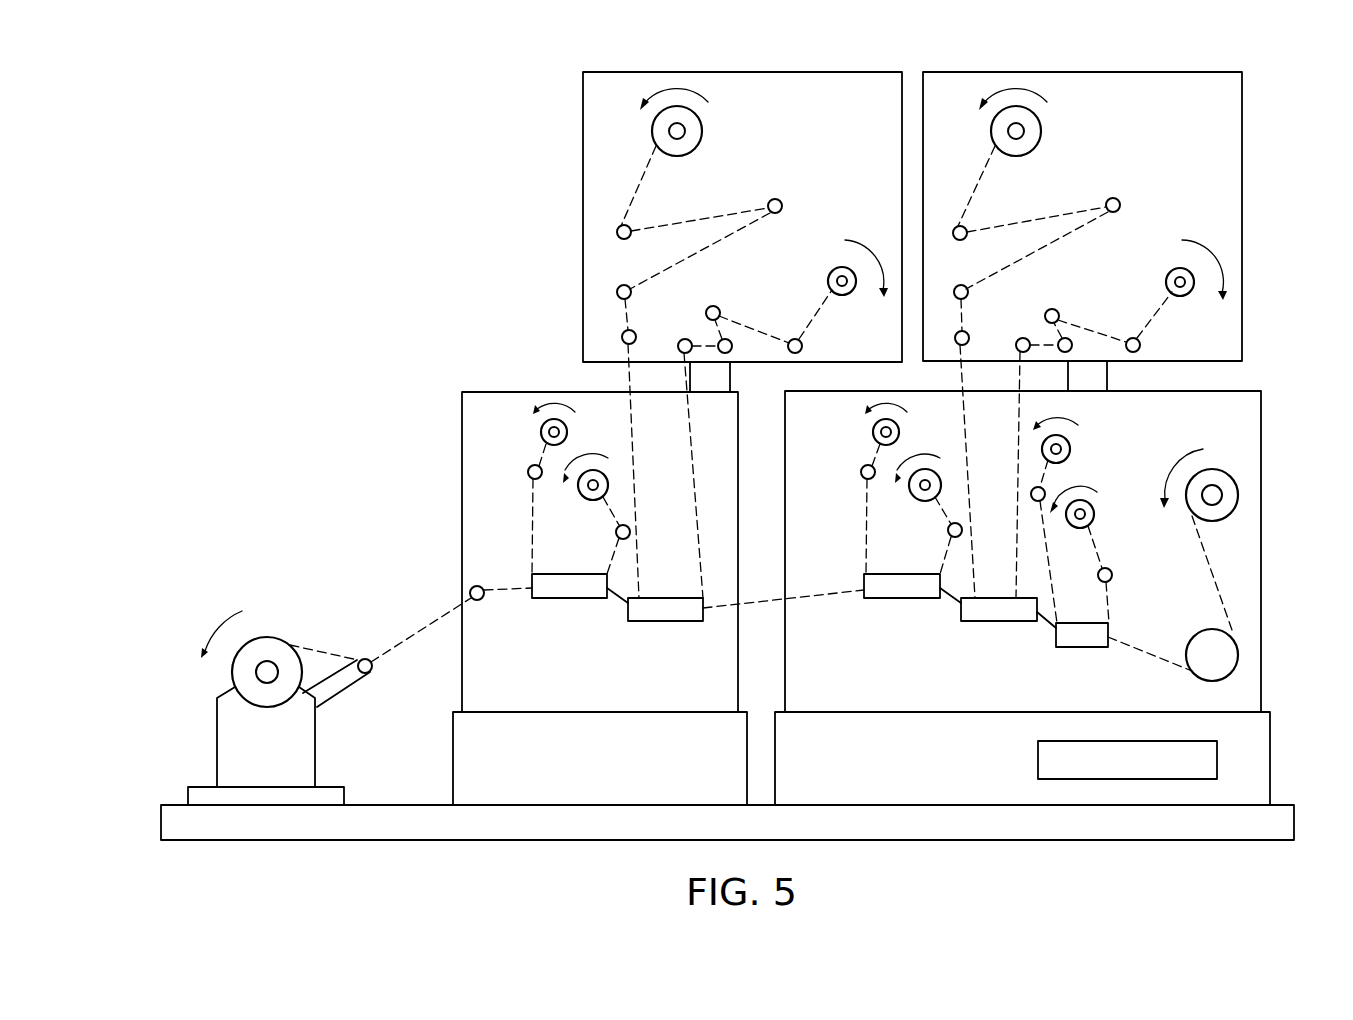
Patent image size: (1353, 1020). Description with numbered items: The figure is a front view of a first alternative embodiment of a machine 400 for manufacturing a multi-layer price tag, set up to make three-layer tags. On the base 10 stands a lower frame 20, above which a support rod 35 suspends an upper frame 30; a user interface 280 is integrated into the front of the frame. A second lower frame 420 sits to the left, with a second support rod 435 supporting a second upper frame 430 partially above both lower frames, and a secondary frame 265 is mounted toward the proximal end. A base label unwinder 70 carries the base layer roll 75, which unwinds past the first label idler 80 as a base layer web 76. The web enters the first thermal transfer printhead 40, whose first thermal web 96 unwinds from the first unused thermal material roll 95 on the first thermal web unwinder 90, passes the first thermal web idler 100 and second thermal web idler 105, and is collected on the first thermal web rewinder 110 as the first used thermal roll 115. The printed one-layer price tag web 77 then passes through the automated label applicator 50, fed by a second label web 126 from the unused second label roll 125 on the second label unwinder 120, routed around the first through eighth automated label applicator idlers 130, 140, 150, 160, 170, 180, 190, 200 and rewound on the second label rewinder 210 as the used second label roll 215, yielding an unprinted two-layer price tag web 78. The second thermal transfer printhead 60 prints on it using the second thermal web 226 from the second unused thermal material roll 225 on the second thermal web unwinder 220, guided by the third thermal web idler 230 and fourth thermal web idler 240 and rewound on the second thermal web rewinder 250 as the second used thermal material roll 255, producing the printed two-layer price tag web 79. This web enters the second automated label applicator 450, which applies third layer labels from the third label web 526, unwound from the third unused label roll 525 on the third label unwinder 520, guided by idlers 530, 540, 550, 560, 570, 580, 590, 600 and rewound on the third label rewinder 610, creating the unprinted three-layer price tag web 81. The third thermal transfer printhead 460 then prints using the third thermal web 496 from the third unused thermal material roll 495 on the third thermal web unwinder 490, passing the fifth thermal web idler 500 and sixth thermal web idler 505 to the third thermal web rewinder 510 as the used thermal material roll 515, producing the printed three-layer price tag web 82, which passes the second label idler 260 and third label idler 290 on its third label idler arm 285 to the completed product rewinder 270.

The base 10 is at (197, 840).
The lower frame 20 is at (1262, 420).
The upper frame 30 is at (1183, 80).
The support rod 35 is at (1104, 370).
The first thermal transfer printhead 40 is at (1094, 647).
The automated label applicator 50 is at (989, 621).
The second thermal transfer printhead 60 is at (890, 598).
The base label unwinder 70 is at (1222, 500).
The base layer roll 75 is at (1237, 482).
The base layer web 76 is at (1226, 610).
The printed one-layer price tag web 77 is at (1048, 630).
The unprinted two-layer price tag web 78 is at (952, 605).
The printed two-layer price tag web 79 is at (766, 600).
The first label idler 80 is at (1236, 658).
The unprinted three-layer price tag web 81 is at (619, 605).
The printed three-layer price tag web 82 is at (422, 628).
The first thermal web unwinder 90 is at (1086, 515).
The first unused thermal material roll 95 is at (1092, 506).
The first thermal web 96 is at (1110, 600).
The first thermal web idler 100 is at (1112, 575).
The second thermal web idler 105 is at (1044, 500).
The first thermal web rewinder 110 is at (1062, 450).
The first used thermal roll 115 is at (1068, 444).
The second label unwinder 120 is at (1024, 133).
The unused second label roll 125 is at (1040, 130).
The second label web 126 is at (975, 168).
The first automated label applicator idler 130 is at (966, 228).
The second automated label applicator idler 140 is at (1128, 190).
The third automated label applicator idler 150 is at (958, 288).
The fourth automated label applicator idler 160 is at (955, 344).
The fifth automated label applicator idler 170 is at (1018, 340).
The sixth automated label applicator idler 180 is at (1069, 338).
The seventh automated label applicator idler 190 is at (1050, 309).
The eighth automated label applicator idler 200 is at (1140, 345).
The second label rewinder 210 is at (1184, 286).
The used second label roll 215 is at (1172, 274).
The second thermal web unwinder 220 is at (928, 479).
The second unused thermal material roll 225 is at (920, 501).
The second thermal web 226 is at (866, 556).
The third thermal web idler 230 is at (956, 522).
The fourth thermal web idler 240 is at (861, 472).
The second thermal web rewinder 250 is at (881, 434).
The second used thermal material roll 255 is at (876, 428).
The second label idler 260 is at (479, 600).
The secondary frame 265 is at (224, 760).
The completed product rewinder 270 is at (256, 676).
The user interface 280 is at (1038, 758).
The third label idler arm 285 is at (338, 686).
The third label idler 290 is at (362, 659).
The machine 400 is at (328, 175).
The second lower frame 420 is at (462, 423).
The second upper frame 430 is at (583, 104).
The second support rod 435 is at (730, 372).
The second automated label applicator 450 is at (674, 621).
The third thermal transfer printhead 460 is at (563, 598).
The third thermal web unwinder 490 is at (599, 486).
The third unused thermal material roll 495 is at (604, 479).
The third thermal web 496 is at (528, 508).
The fifth thermal web idler 500 is at (617, 532).
The sixth thermal web idler 505 is at (539, 478).
The third thermal web rewinder 510 is at (549, 434).
The used thermal material roll 515 is at (544, 427).
The third label unwinder 520 is at (685, 131).
The third unused label roll 525 is at (700, 118).
The third label web 526 is at (640, 166).
The automated label applicator idler 530 is at (617, 232).
The automated label applicator idler 540 is at (778, 198).
The automated label applicator idler 550 is at (617, 292).
The automated label applicator idler 560 is at (622, 337).
The automated label applicator idler 570 is at (683, 339).
The automated label applicator idler 580 is at (730, 340).
The automated label applicator idler 590 is at (713, 306).
The automated label applicator idler 600 is at (802, 346).
The third label rewinder 610 is at (835, 281).